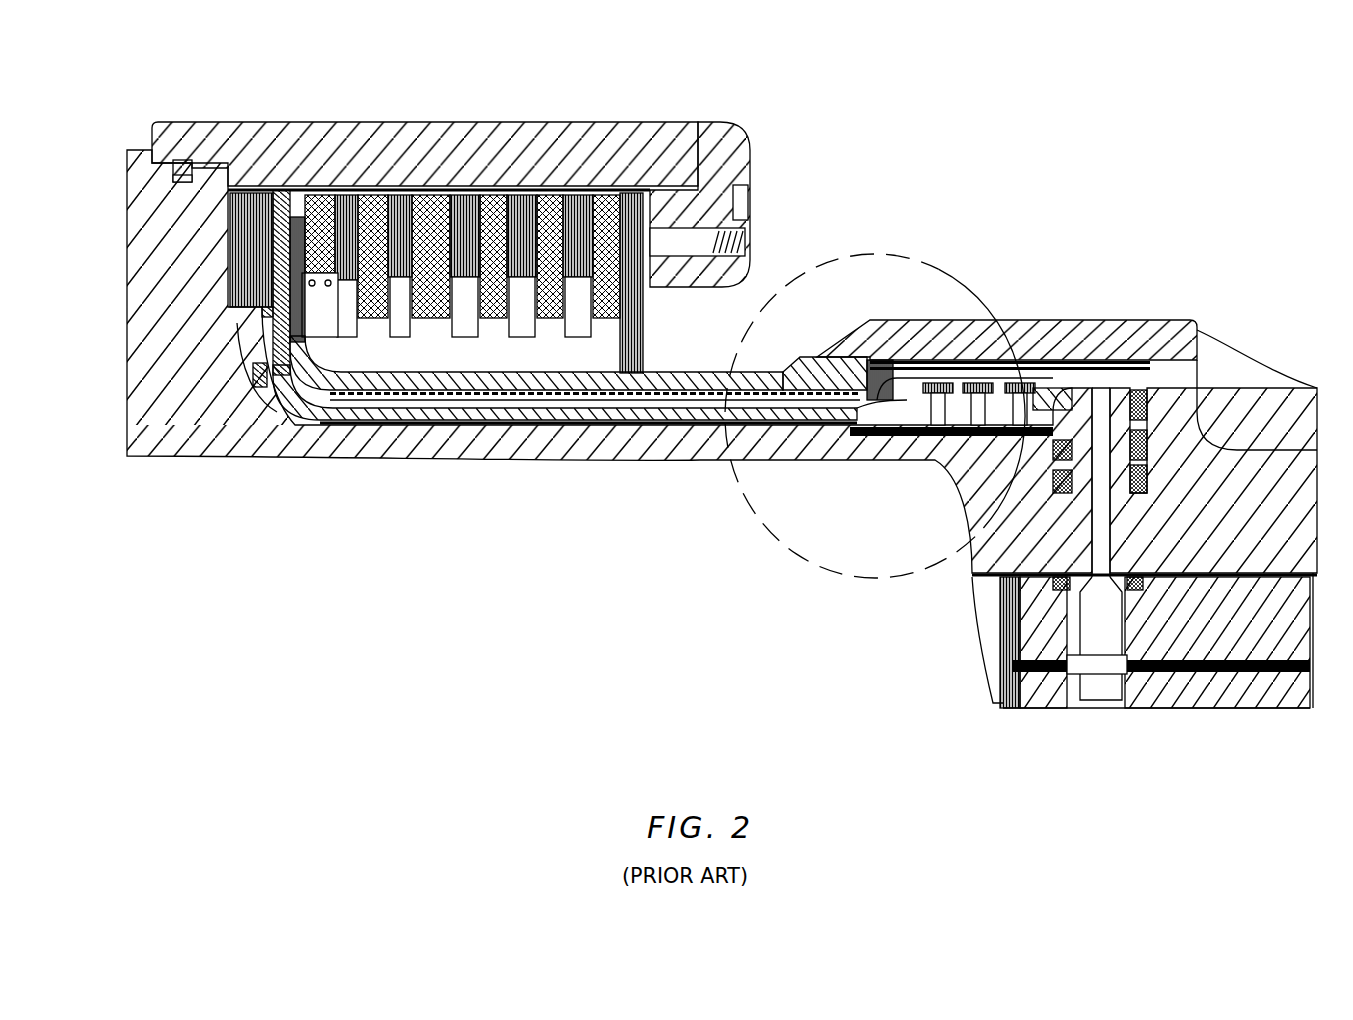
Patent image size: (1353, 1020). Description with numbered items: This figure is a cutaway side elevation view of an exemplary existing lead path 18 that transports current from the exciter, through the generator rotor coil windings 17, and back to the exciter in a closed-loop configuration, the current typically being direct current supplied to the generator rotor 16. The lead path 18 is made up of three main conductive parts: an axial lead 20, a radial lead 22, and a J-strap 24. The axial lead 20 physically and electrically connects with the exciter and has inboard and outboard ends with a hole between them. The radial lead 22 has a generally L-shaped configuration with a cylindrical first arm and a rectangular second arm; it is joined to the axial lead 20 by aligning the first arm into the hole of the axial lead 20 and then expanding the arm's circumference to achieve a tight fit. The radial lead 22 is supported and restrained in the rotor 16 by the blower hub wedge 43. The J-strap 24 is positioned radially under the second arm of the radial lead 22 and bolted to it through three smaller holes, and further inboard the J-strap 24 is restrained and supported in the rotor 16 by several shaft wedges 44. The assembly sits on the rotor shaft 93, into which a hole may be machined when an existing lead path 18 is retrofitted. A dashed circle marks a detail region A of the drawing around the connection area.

The generator rotor 16 is at (491, 432).
The generator rotor coil windings 17 is at (380, 193).
The conductive lead path 18 is at (623, 403).
The axial lead 20 is at (1193, 645).
The radial lead 22 is at (1083, 523).
The J-strap 24 is at (867, 410).
The blower hub wedge 43 is at (1027, 342).
The shaft wedges 44 is at (810, 390).
The rotor shaft 93 is at (358, 428).
The detail region A is at (750, 521).